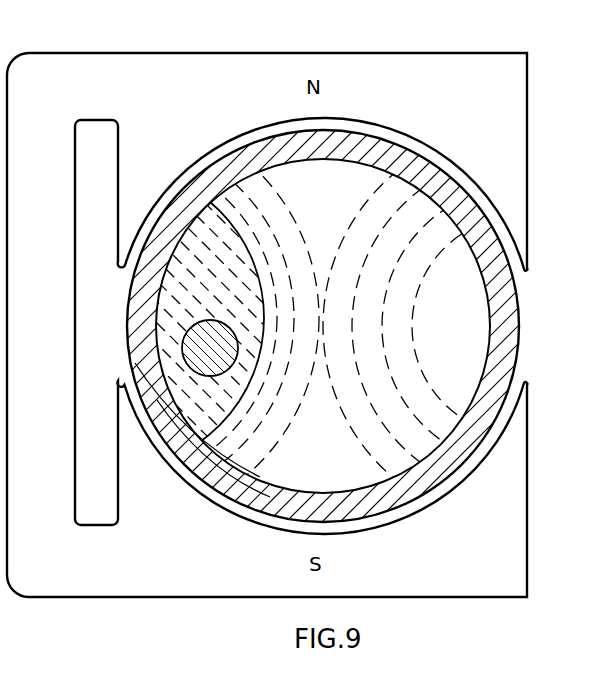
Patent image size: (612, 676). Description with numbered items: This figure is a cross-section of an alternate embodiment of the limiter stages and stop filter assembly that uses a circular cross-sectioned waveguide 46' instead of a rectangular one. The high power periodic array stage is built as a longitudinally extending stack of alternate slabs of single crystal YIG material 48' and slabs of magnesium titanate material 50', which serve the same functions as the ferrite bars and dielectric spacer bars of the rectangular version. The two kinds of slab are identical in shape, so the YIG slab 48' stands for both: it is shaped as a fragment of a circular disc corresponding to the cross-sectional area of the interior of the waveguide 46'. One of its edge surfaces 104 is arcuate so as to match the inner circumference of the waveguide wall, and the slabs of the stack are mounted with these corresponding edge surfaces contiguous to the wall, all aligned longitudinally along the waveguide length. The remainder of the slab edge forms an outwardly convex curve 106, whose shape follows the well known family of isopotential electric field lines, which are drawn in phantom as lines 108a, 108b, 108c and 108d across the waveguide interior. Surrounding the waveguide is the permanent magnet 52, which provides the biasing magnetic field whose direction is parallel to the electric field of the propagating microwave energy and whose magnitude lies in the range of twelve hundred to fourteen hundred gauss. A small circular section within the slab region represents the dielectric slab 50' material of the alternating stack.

The permanent magnet 52 is at (456, 62).
The circular cross-sectioned waveguide 46' is at (306, 338).
The slab of single crystal YIG material 48' is at (151, 318).
The slab of MgTiO2 material 50' is at (306, 338).
The edge surface 104 is at (180, 213).
The outwardly convex curve 106 is at (243, 250).
The isopotential electric field line 108a is at (368, 200).
The isopotential electric field line 108b is at (372, 247).
The isopotential electric field line 108c is at (390, 284).
The isopotential electric field line 108d is at (413, 327).